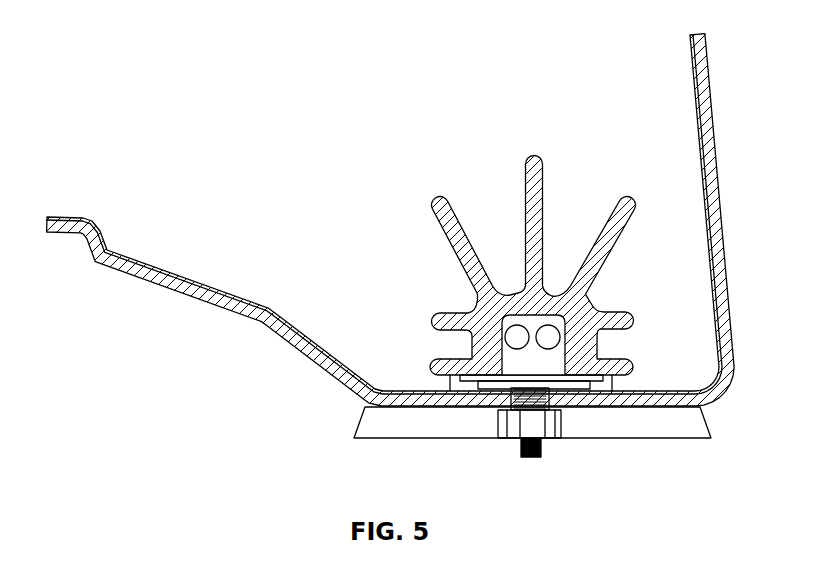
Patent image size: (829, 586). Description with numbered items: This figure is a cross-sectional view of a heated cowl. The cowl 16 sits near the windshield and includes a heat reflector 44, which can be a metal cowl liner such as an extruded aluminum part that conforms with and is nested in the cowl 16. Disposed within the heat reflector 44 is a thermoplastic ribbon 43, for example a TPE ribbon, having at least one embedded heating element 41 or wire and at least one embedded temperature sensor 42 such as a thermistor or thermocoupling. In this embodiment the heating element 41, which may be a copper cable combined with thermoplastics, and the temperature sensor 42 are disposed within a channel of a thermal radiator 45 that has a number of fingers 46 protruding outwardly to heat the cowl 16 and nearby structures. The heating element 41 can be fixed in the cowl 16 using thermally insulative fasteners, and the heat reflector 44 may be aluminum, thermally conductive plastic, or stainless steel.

The cowl 16 is at (716, 125).
The heat reflector 44 is at (697, 108).
The thermoplastic ribbon 43 is at (528, 360).
The heating element 41 is at (508, 333).
The temperature sensor 42 is at (556, 334).
The thermal radiator 45 is at (612, 327).
The fingers 46 is at (534, 156).